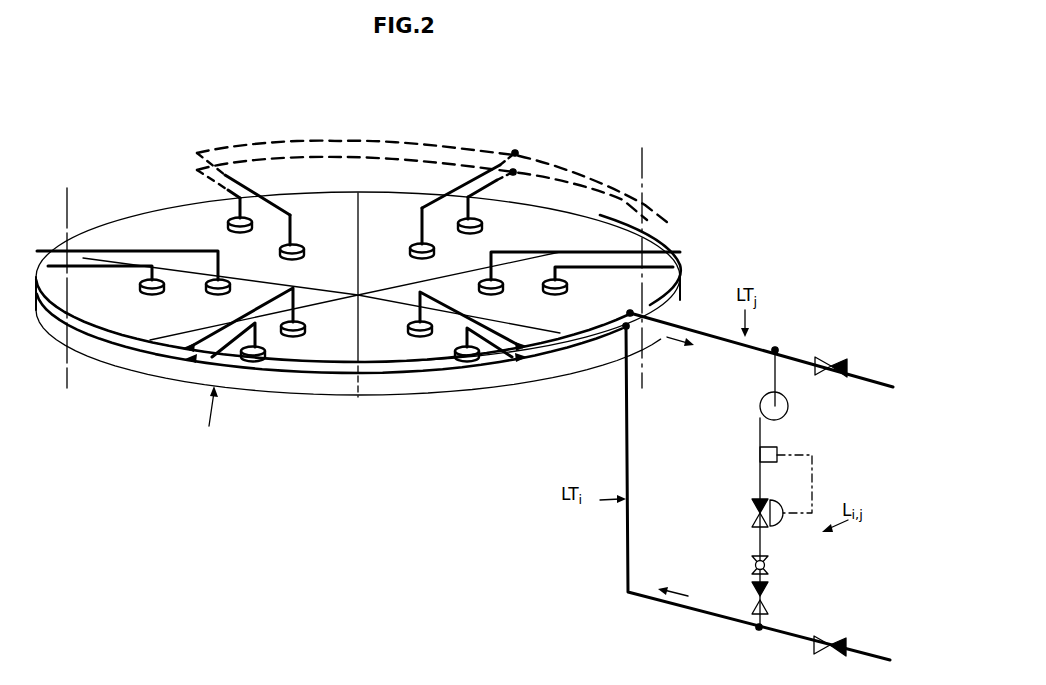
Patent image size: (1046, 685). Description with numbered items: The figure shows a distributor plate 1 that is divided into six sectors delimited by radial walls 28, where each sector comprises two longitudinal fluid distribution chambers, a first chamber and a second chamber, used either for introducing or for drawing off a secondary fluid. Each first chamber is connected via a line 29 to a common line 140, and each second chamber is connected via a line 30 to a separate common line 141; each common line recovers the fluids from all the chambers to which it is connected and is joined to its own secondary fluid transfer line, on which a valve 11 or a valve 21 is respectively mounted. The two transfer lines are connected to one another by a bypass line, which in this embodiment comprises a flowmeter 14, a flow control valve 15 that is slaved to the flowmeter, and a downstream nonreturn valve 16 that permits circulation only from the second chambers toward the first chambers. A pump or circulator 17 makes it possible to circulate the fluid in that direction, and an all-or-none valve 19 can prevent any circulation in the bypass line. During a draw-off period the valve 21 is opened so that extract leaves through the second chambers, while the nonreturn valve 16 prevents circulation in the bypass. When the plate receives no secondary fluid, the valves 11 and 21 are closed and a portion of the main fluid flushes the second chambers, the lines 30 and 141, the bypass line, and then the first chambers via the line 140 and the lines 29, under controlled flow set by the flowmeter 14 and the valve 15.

The rotary table 1 is at (52, 352).
The valve 11 is at (830, 357).
The flowmeter 14 is at (760, 454).
The flow control valve 15 is at (752, 506).
The nonreturn valve 16 is at (752, 562).
The pump or circulator 17 is at (760, 398).
The all-or-none valve 19 is at (752, 592).
The valve 21 is at (817, 638).
The walls 28 is at (362, 215).
The line 29 is at (497, 186).
The line 30 is at (472, 188).
The line 140 is at (199, 170).
The line 141 is at (199, 155).